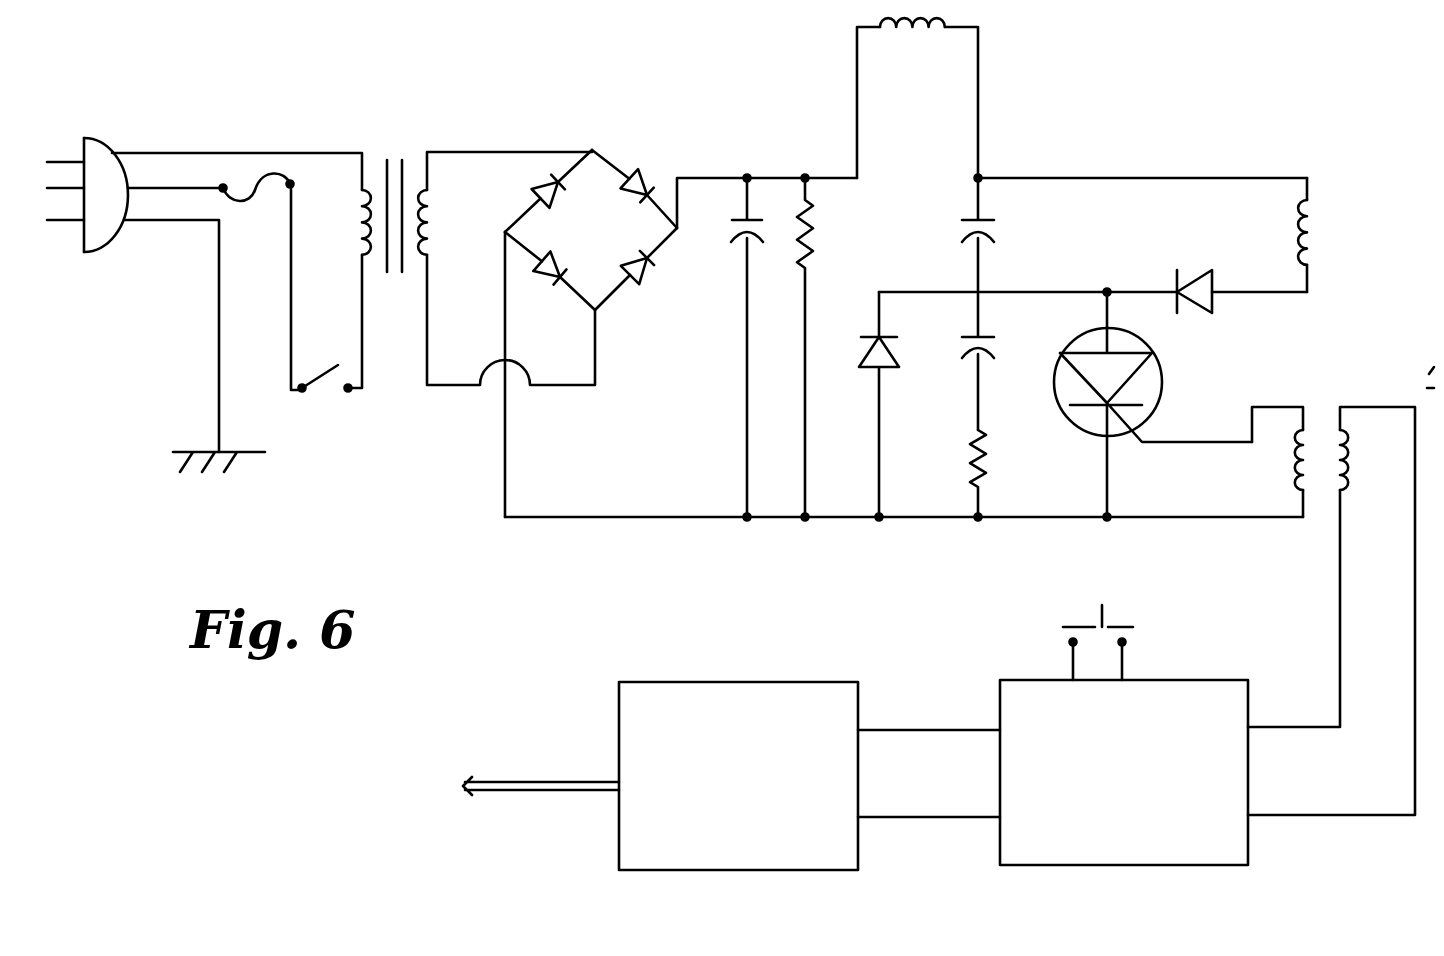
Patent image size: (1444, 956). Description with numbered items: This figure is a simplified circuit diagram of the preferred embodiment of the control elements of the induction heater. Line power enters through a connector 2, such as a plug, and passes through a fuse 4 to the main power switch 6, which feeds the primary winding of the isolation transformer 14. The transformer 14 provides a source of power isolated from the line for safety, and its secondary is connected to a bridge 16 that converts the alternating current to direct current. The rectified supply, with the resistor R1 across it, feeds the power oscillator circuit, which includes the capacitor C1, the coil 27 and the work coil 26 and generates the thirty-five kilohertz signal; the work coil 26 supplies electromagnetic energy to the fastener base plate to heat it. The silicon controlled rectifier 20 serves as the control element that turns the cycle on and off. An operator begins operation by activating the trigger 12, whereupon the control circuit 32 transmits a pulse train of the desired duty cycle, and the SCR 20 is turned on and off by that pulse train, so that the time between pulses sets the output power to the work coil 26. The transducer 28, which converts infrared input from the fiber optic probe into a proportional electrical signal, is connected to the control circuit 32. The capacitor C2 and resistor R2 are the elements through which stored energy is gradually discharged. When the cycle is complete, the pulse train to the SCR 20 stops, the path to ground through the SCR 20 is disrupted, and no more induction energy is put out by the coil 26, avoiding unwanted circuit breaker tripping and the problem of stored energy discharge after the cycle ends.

The connector 2 is at (112, 150).
The fuse 4 is at (262, 200).
The main power switch 6 is at (310, 385).
The isolation transformer 14 is at (415, 160).
The bridge 16 is at (608, 158).
The work coil 26 is at (955, 12).
The coil 27 is at (1316, 232).
The silicon controlled rectifier 20 is at (1158, 356).
The transducer 28 is at (725, 682).
The control circuit 32 is at (1035, 678).
The trigger 12 is at (1125, 612).
The resistor R1 is at (831, 347).
The resistor R2 is at (1000, 473).
The capacitor C1 is at (966, 226).
The capacitor C2 is at (996, 361).